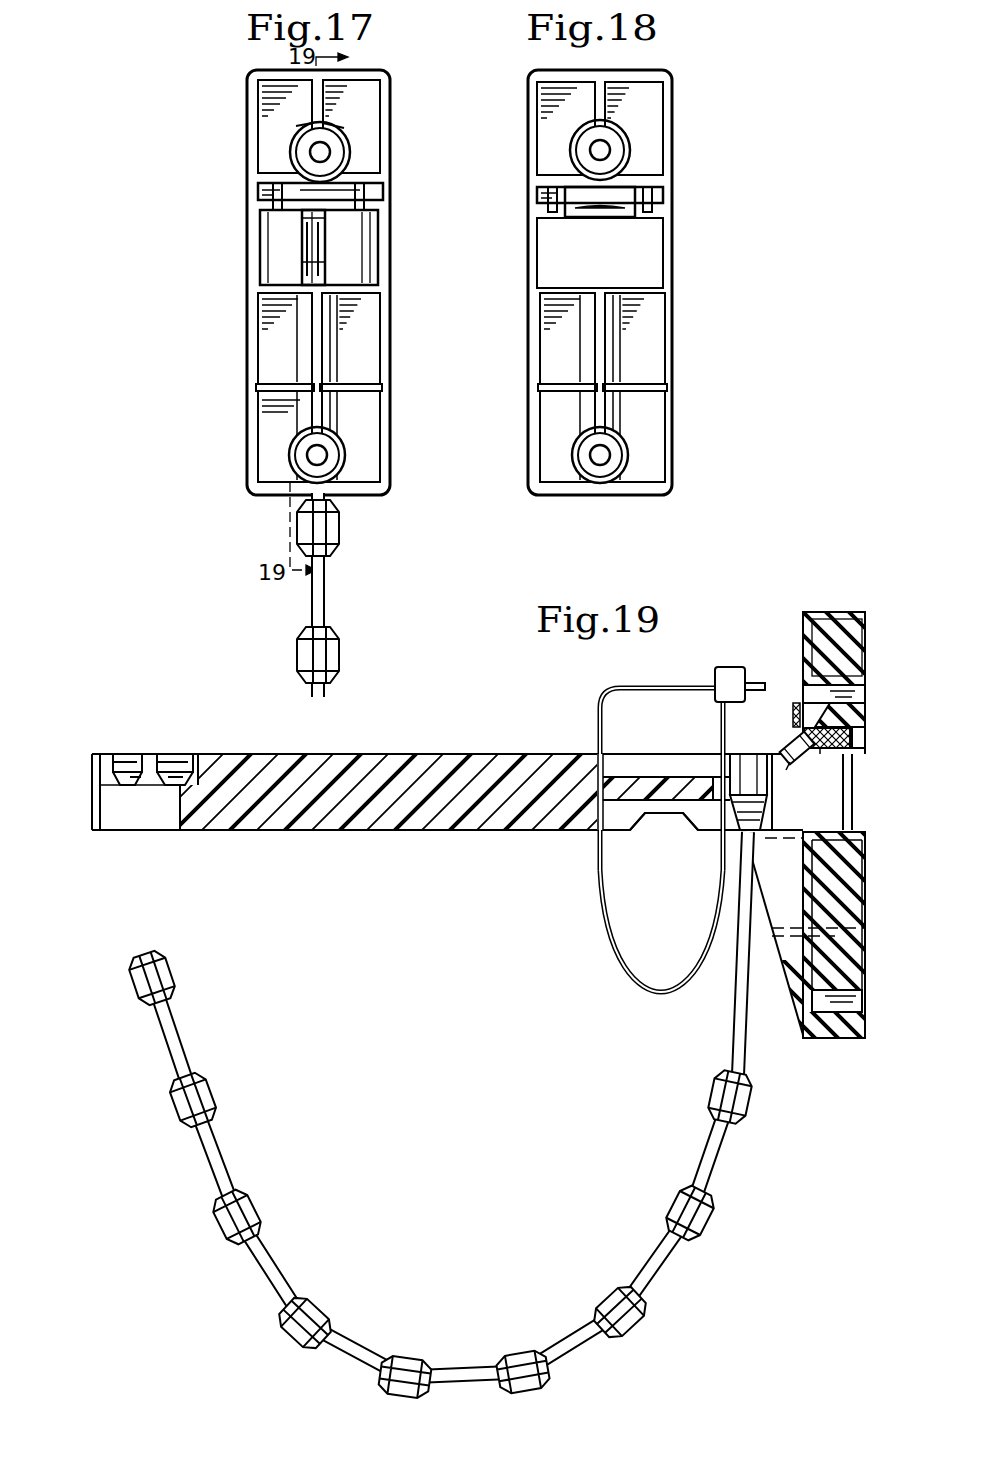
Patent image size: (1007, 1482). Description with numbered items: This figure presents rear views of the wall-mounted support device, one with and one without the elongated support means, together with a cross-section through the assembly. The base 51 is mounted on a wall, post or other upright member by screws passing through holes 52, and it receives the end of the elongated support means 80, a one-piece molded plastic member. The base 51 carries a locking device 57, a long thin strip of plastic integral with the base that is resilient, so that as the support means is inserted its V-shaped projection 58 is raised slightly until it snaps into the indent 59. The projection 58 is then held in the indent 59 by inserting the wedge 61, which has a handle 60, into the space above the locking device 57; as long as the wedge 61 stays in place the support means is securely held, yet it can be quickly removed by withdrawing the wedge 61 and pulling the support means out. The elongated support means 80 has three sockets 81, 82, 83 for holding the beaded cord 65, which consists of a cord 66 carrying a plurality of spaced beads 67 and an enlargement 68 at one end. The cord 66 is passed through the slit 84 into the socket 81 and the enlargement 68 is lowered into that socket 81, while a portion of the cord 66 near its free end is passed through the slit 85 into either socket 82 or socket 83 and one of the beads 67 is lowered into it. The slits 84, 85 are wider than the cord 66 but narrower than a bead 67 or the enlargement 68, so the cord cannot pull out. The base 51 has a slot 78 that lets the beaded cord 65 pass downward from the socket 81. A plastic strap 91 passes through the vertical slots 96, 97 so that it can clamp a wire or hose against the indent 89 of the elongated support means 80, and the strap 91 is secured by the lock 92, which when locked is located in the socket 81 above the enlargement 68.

In FIG. 19, the base 51 is at (795, 630).
In FIG. 17, the holes 52 is at (322, 152).
In FIG. 18, the holes 52 is at (603, 150).
In FIG. 19, the holes 52 is at (808, 688).
In FIG. 17, the locking device 57 is at (350, 192).
In FIG. 18, the locking device 57 is at (627, 195).
In FIG. 19, the locking device 57 is at (858, 740).
In FIG. 17, the V-shaped projection 58 is at (300, 208).
In FIG. 18, the V-shaped projection 58 is at (605, 215).
In FIG. 19, the V-shaped projection 58 is at (786, 746).
In FIG. 19, the indent 59 is at (795, 760).
In FIG. 19, the handle 60 is at (793, 718).
In FIG. 19, the wedge 61 is at (822, 760).
In FIG. 17, the beaded cord 65 is at (346, 590).
In FIG. 19, the beaded cord 65 is at (452, 1115).
In FIG. 19, the cord 66 is at (242, 1258).
In FIG. 19, the beads 67 is at (192, 1068).
In FIG. 19, the enlargement 68 is at (770, 812).
In FIG. 19, the slot 78 is at (778, 876).
In FIG. 17, the elongated support means 80 is at (378, 235).
In FIG. 19, the elongated support means 80 is at (462, 742).
In FIG. 19, the socket 81 is at (738, 762).
In FIG. 19, the socket 82 is at (182, 760).
In FIG. 19, the socket 83 is at (130, 760).
In FIG. 17, the slit 84 is at (318, 252).
In FIG. 19, the slit 84 is at (855, 800).
In FIG. 19, the slit 85 is at (100, 797).
In FIG. 19, the indent 89 is at (665, 820).
In FIG. 19, the strap 91 is at (598, 888).
In FIG. 19, the lock 92 is at (725, 668).
In FIG. 19, the vertical slot 96 is at (604, 772).
In FIG. 19, the vertical slot 97 is at (720, 805).